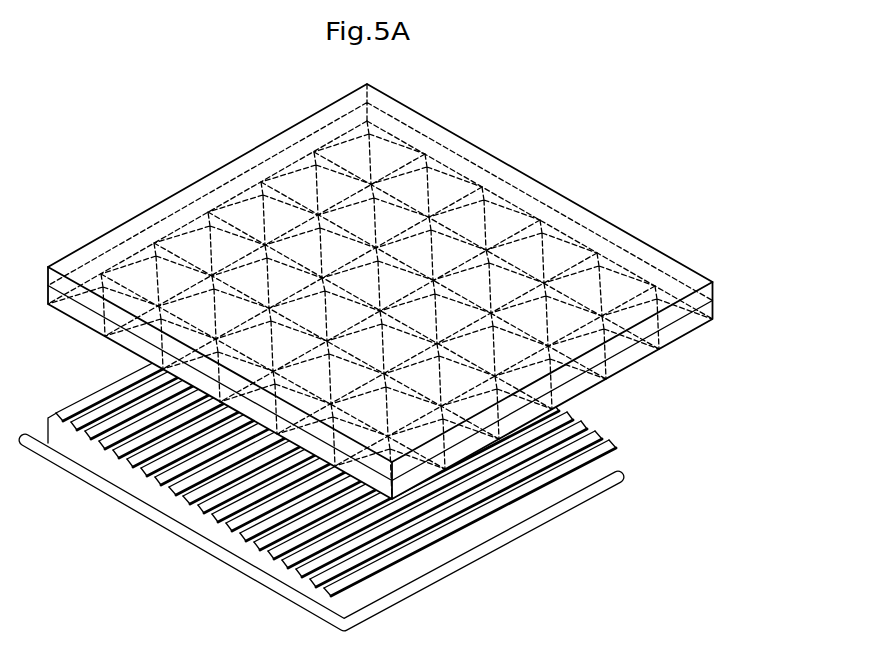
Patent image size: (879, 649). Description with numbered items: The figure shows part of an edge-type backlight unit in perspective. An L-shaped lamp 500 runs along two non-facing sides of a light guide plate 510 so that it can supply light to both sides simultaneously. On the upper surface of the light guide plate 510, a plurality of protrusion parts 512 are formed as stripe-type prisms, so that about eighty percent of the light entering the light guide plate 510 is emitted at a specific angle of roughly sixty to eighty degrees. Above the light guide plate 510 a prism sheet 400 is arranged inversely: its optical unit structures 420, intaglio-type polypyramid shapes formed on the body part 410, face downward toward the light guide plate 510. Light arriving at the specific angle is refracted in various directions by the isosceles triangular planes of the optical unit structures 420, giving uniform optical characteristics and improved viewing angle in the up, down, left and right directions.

The prism sheet 400 is at (432, 291).
The body part 410 is at (713, 289).
The optical unit structures 420 is at (703, 328).
The lamp 500 is at (622, 478).
The light guide plate 510 is at (358, 430).
The protrusion parts 512 is at (588, 423).